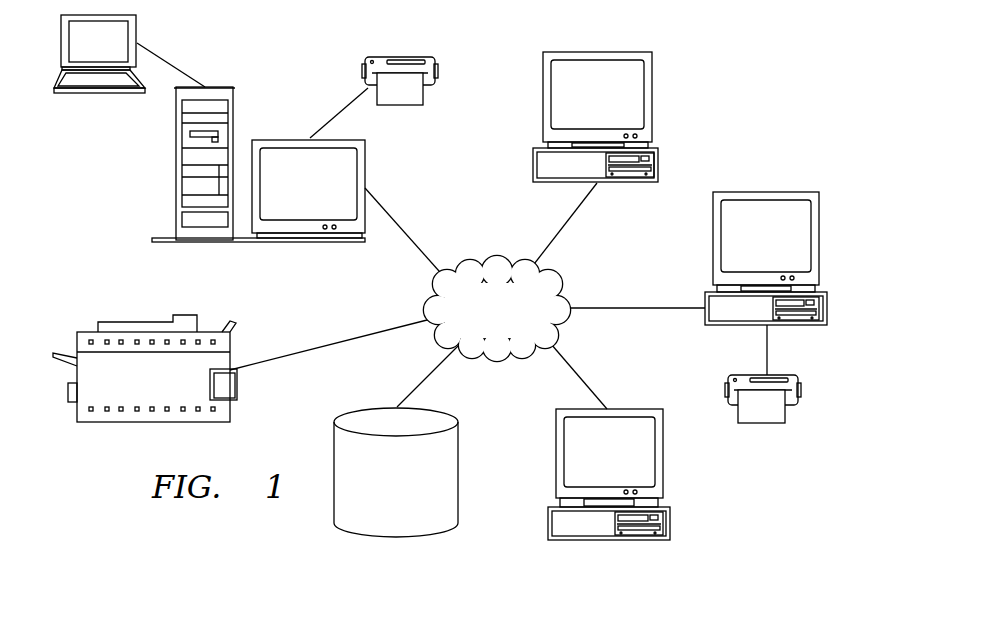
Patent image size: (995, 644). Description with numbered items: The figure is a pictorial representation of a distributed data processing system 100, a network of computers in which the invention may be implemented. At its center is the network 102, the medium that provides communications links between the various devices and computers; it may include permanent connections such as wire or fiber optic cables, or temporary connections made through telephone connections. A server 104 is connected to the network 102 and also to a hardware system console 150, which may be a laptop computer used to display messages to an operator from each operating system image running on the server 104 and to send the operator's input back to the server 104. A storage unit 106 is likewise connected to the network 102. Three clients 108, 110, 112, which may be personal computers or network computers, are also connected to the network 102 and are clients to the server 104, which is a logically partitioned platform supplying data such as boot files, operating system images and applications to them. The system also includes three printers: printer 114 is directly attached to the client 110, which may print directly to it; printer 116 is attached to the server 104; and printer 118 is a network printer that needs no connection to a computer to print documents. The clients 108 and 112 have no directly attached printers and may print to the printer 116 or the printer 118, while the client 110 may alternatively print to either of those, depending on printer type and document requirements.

The distributed data processing system 100 is at (752, 119).
The network 102 is at (478, 319).
The server 104 is at (291, 191).
The storage unit 106 is at (377, 491).
The client 108 is at (579, 106).
The client 110 is at (748, 248).
The client 112 is at (589, 463).
The printer 114 is at (801, 392).
The printer 116 is at (438, 72).
The printer 118 is at (129, 391).
The hardware system console 150 is at (79, 49).